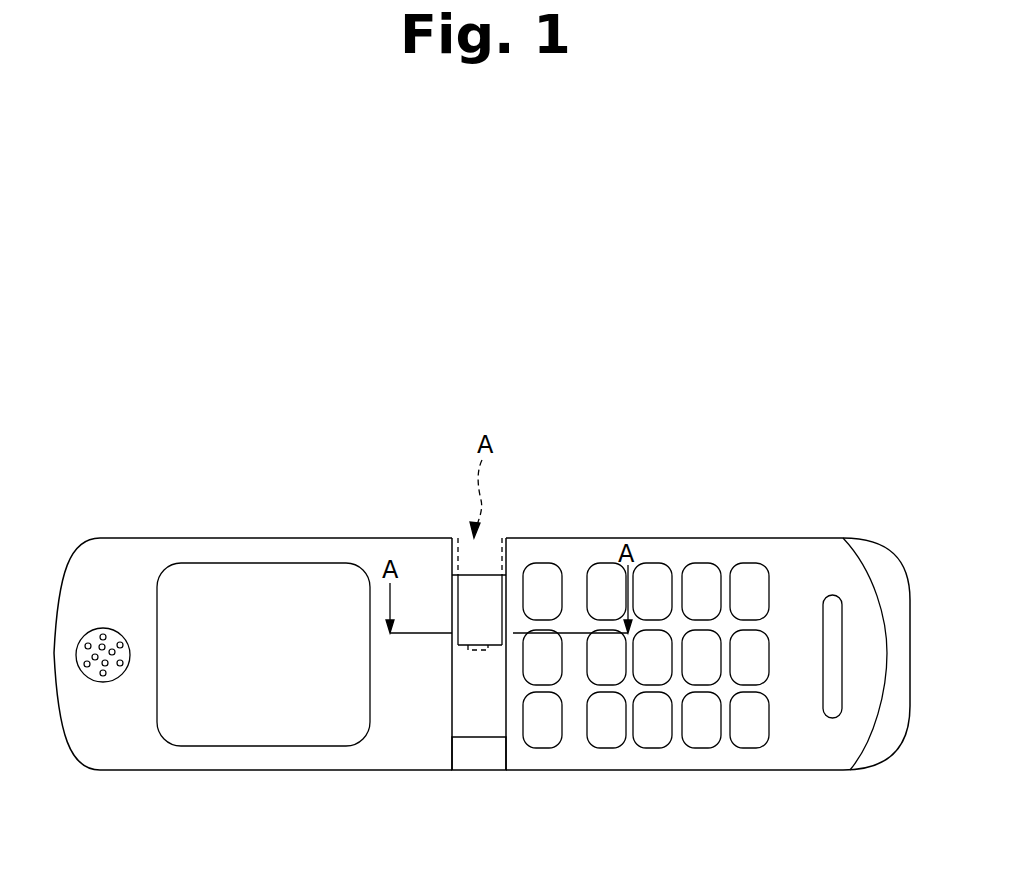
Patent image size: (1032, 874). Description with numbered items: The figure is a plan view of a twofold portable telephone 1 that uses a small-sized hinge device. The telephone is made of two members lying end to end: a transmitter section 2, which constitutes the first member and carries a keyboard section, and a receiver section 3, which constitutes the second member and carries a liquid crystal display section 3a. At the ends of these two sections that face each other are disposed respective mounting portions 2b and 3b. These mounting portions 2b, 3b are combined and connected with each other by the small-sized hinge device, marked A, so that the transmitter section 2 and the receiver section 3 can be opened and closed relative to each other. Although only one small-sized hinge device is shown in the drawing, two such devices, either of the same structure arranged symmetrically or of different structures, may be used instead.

The twofold portable telephone 1 is at (529, 531).
The transmitter section 2 is at (690, 553).
The mounting portion 2b is at (486, 553).
The receiver section 3 is at (240, 549).
The liquid crystal display section 3a is at (273, 735).
The mounting portion 3b is at (505, 631).